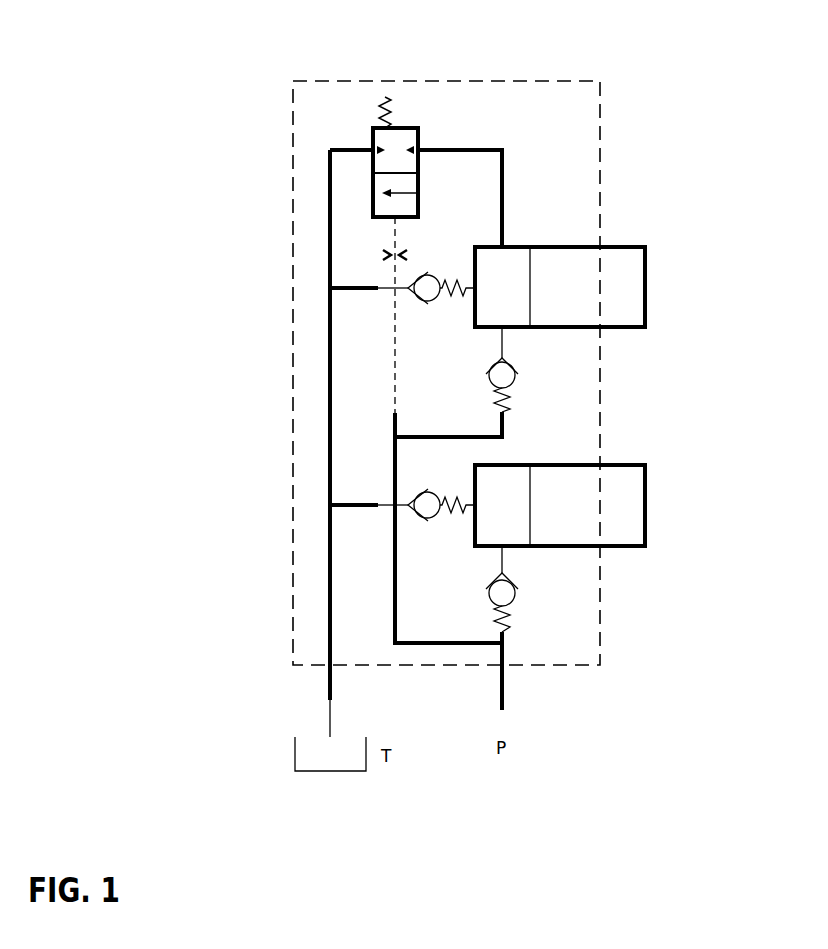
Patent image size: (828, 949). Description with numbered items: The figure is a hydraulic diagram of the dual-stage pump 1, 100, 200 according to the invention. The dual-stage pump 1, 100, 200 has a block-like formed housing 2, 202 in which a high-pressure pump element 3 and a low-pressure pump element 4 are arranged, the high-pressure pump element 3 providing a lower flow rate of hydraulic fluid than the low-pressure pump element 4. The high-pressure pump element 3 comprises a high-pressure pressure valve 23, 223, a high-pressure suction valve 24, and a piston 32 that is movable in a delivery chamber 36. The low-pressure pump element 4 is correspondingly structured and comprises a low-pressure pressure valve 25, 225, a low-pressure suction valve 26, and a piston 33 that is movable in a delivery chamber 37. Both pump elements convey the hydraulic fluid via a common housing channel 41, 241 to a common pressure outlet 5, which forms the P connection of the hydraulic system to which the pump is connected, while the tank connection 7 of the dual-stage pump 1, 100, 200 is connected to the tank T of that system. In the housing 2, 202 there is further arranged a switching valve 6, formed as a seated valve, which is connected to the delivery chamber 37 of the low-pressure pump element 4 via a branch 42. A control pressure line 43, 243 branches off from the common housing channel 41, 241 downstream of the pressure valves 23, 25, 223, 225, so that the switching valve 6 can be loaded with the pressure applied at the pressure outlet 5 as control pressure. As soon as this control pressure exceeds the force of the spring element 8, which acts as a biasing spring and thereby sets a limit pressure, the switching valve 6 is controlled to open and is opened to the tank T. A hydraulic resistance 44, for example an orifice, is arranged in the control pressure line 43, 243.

The dual-stage pump 1 is at (399, 396).
The dual-stage pump 100 is at (399, 396).
The dual-stage pump 200 is at (199, 173).
The housing 2 is at (441, 343).
The housing 202 is at (307, 80).
The high-pressure pump element 3 is at (656, 489).
The low-pressure pump element 4 is at (657, 284).
The pressure outlet 5 is at (502, 692).
The switching valve 6 is at (429, 130).
The tank connection 7 is at (330, 697).
The spring element 8 is at (380, 108).
The high-pressure pressure valve 23 is at (538, 595).
The high-pressure pressure valve 223 is at (515, 606).
The high-pressure suction valve 24 is at (419, 520).
The low-pressure pressure valve 25 is at (535, 383).
The low-pressure pressure valve 225 is at (517, 385).
The low-pressure suction valve 26 is at (429, 302).
The piston 32 is at (633, 530).
The piston 33 is at (623, 262).
The delivery chamber 36 is at (512, 478).
The delivery chamber 37 is at (512, 262).
The common housing channel 41 is at (416, 471).
The common housing channel 241 is at (395, 470).
The branch 42 is at (504, 150).
The control pressure line 43 is at (369, 315).
The control pressure line 243 is at (395, 363).
The hydraulic resistance 44 is at (407, 246).